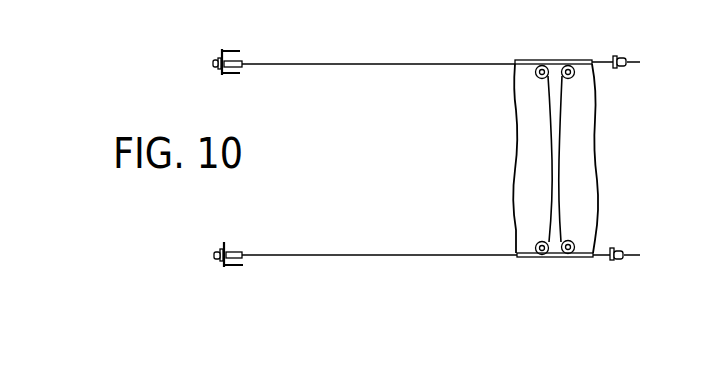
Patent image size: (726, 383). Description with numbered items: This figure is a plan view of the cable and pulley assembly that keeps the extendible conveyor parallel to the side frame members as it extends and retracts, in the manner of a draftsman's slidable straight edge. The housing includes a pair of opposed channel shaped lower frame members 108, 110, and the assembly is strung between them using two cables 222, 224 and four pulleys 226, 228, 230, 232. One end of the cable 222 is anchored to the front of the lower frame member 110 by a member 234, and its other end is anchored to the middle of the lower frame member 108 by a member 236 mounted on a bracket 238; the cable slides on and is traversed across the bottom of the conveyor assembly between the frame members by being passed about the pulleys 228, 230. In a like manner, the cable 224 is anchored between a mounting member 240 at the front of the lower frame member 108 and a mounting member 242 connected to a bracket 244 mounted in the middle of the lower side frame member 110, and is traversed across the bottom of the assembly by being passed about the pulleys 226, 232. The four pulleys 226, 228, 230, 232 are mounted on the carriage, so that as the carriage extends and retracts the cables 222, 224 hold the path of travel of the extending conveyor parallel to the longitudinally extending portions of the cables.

The lower frame member 108 is at (231, 73).
The lower frame member 110 is at (228, 249).
The cable 222 is at (362, 254).
The cable 224 is at (373, 66).
The pulley 226 is at (535, 74).
The pulley 228 is at (535, 245).
The pulley 230 is at (575, 76).
The pulley 232 is at (575, 243).
The member 234 is at (213, 256).
The member 236 is at (630, 62).
The bracket 238 is at (616, 55).
The mounting member 240 is at (216, 66).
The mounting member 242 is at (630, 254).
The bracket 244 is at (620, 247).